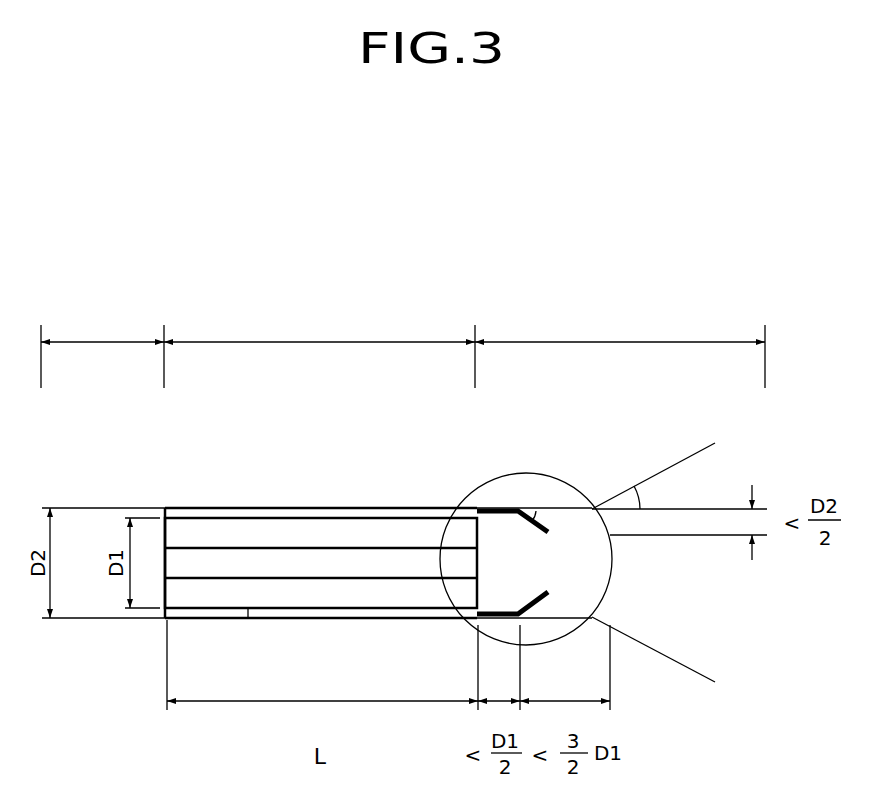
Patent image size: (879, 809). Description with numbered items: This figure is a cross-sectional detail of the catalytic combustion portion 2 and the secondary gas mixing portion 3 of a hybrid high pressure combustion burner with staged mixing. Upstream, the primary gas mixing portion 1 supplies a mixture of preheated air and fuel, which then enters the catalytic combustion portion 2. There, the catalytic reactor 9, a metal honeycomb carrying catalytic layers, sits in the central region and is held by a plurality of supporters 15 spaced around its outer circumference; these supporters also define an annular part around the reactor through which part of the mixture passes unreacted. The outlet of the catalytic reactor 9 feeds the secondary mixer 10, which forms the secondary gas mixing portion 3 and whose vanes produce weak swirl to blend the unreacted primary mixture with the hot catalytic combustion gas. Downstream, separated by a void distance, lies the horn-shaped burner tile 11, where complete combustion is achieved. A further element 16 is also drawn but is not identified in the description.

The primary gas mixing portion 1 is at (102, 324).
The catalytic combustion portion 2 is at (319, 324).
The secondary gas mixing portion 3 is at (620, 324).
The catalytic reactor 9 is at (330, 545).
The secondary mixer 10 is at (492, 525).
The burner tile 11 is at (625, 495).
The supporters 15 is at (247, 515).
The inner surface 16 is at (560, 520).